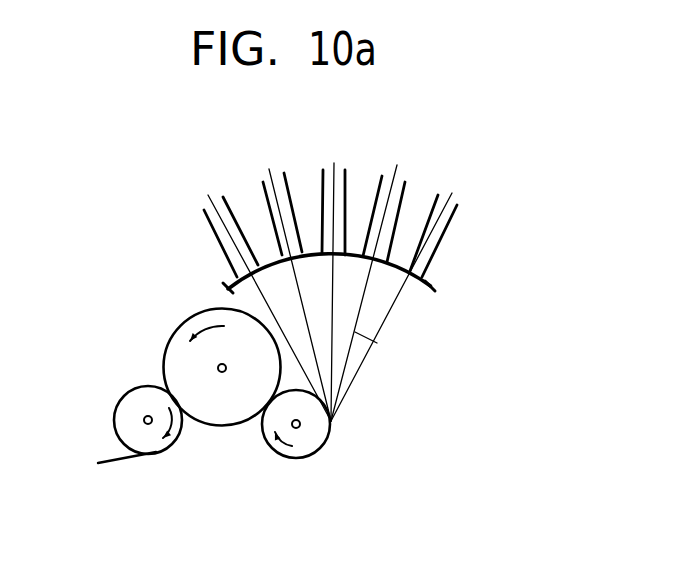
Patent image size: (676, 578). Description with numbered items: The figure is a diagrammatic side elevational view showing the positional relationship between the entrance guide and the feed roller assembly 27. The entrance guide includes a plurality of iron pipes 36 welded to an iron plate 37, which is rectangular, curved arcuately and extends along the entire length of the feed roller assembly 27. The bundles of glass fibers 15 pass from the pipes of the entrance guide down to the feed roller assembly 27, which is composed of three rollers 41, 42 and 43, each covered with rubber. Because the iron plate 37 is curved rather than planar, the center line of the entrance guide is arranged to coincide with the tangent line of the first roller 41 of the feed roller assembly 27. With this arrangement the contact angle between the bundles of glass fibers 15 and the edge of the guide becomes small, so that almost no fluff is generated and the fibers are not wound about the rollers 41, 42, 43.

The bundles of glass fibers 15 is at (358, 362).
The feed roller assembly 27 is at (159, 330).
The iron pipes 36 is at (222, 246).
The iron plate 37 is at (429, 288).
The first roller 41 is at (317, 441).
The roller 42 is at (219, 423).
The roller 43 is at (116, 414).